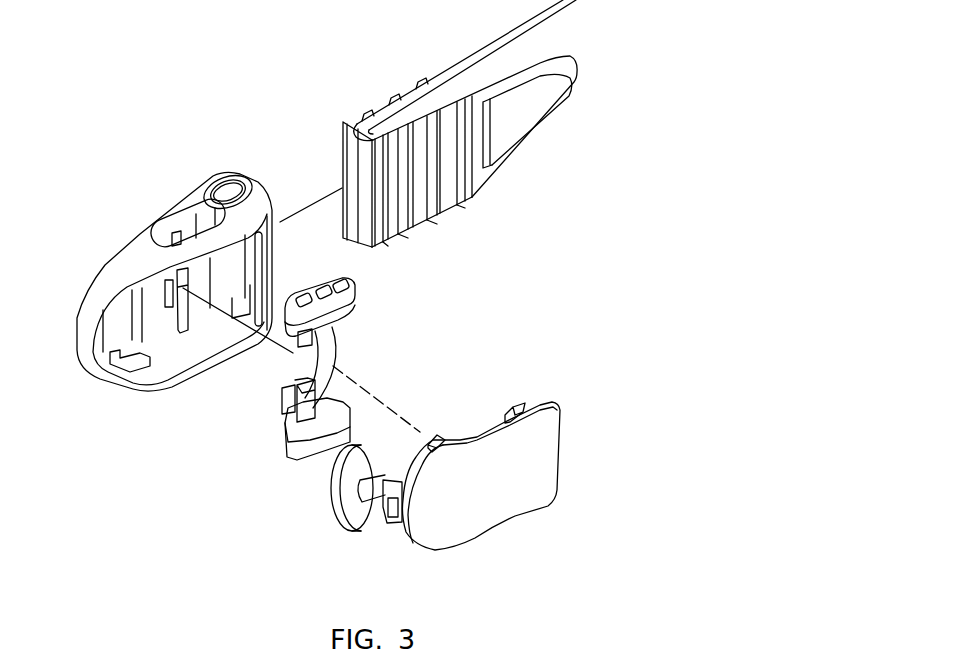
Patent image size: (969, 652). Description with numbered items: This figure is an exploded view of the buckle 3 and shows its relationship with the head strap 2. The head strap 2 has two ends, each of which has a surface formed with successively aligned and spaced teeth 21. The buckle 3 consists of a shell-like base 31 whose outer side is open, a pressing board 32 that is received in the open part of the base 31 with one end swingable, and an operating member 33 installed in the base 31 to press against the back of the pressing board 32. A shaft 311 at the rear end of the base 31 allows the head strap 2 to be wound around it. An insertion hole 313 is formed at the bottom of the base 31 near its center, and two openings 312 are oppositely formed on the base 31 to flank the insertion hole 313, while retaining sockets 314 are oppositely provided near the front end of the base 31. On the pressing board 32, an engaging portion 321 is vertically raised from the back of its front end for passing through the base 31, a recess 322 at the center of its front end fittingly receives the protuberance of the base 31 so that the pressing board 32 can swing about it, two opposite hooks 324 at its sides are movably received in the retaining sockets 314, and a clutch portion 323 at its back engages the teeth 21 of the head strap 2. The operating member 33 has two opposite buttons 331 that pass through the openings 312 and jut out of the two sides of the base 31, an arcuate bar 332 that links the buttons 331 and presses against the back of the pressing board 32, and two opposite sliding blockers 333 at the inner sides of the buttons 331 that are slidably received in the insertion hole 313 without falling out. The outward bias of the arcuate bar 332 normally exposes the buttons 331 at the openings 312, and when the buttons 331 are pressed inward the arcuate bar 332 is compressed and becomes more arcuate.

The head strap 2 is at (583, 50).
The teeth 21 is at (343, 123).
The buckle 3 is at (257, 552).
The base 31 is at (136, 246).
The shaft 311 is at (235, 260).
The openings 312 is at (188, 223).
The insertion hole 313 is at (182, 312).
The retaining sockets 314 is at (137, 350).
The operating member 33 is at (358, 312).
The buttons 331 is at (348, 280).
The arcuate bar 332 is at (334, 371).
The sliding blockers 333 is at (283, 398).
The pressing board 32 is at (513, 498).
The engaging portion 321 is at (340, 490).
The recess 322 is at (388, 501).
The clutch portion 323 is at (513, 410).
The hooks 324 is at (433, 436).